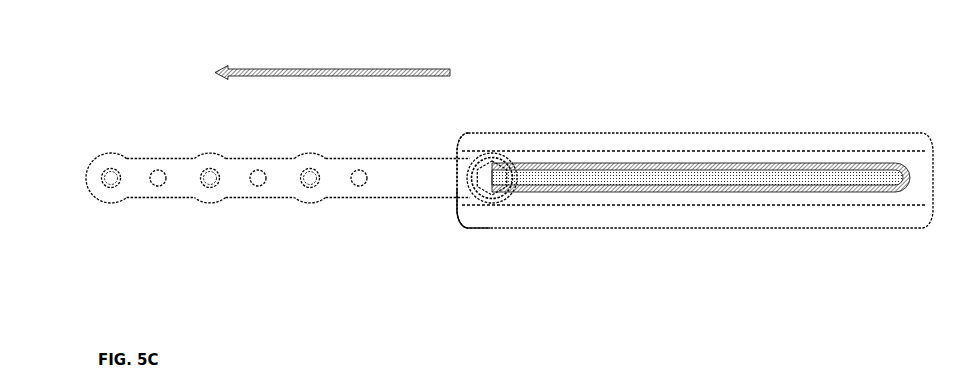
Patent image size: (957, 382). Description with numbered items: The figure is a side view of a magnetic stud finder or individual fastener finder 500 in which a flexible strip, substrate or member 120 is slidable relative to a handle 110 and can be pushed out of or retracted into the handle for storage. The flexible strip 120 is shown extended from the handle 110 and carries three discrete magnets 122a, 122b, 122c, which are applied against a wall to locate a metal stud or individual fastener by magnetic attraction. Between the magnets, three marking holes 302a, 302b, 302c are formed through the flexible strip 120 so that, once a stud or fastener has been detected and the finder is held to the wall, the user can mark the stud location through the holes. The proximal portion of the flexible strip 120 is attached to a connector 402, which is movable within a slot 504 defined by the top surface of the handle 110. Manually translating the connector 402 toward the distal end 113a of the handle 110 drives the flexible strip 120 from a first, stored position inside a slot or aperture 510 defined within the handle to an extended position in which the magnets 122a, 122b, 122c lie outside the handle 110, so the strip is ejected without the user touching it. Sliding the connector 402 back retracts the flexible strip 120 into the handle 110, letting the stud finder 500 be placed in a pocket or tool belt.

The magnetic stud finder 500 is at (509, 171).
The handle 110 is at (655, 229).
The distal end 113a is at (462, 145).
The flexible strip 120 is at (400, 158).
The magnet 122a is at (313, 160).
The magnet 122b is at (213, 160).
The magnet 122c is at (113, 157).
The marking hole 302a is at (159, 187).
The marking hole 302b is at (258, 186).
The marking hole 302c is at (360, 186).
The connector 402 is at (505, 156).
The slot 504 is at (578, 183).
The slot or aperture 510 is at (456, 204).